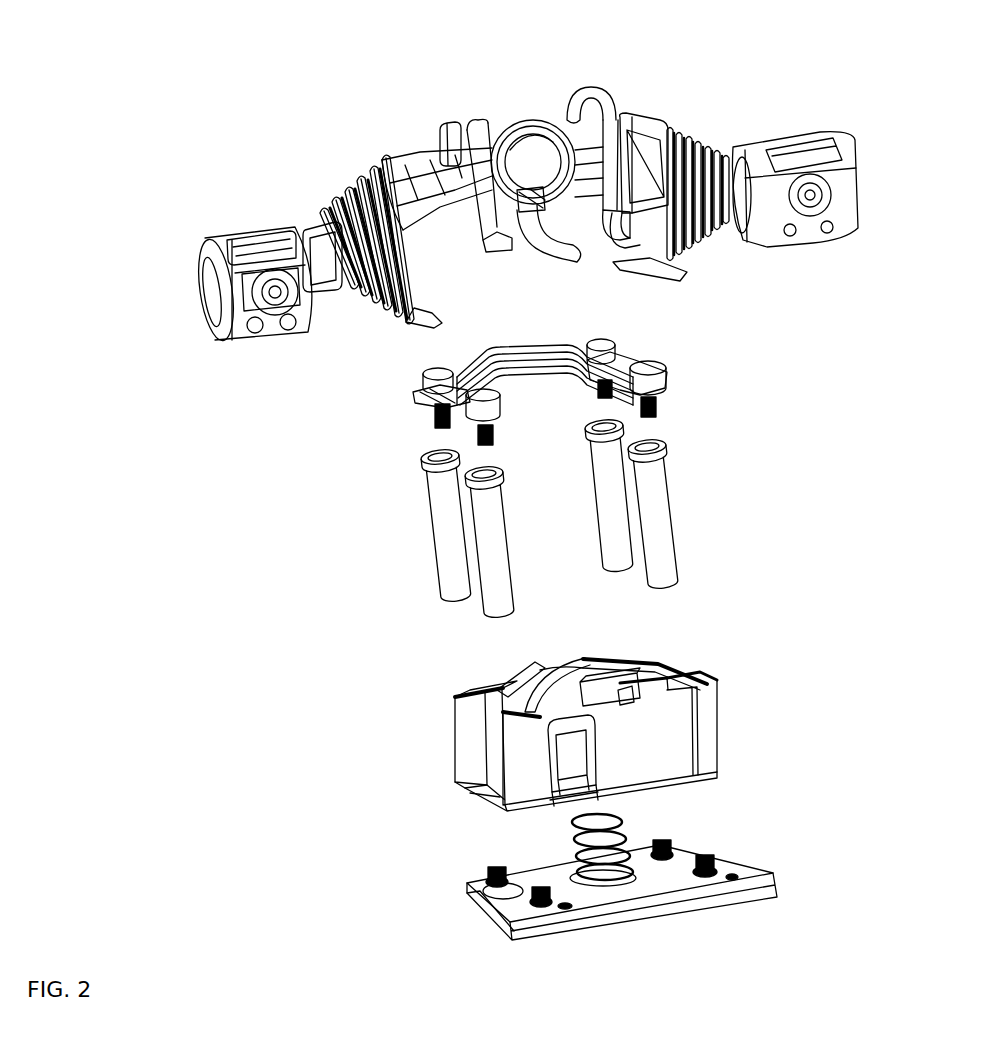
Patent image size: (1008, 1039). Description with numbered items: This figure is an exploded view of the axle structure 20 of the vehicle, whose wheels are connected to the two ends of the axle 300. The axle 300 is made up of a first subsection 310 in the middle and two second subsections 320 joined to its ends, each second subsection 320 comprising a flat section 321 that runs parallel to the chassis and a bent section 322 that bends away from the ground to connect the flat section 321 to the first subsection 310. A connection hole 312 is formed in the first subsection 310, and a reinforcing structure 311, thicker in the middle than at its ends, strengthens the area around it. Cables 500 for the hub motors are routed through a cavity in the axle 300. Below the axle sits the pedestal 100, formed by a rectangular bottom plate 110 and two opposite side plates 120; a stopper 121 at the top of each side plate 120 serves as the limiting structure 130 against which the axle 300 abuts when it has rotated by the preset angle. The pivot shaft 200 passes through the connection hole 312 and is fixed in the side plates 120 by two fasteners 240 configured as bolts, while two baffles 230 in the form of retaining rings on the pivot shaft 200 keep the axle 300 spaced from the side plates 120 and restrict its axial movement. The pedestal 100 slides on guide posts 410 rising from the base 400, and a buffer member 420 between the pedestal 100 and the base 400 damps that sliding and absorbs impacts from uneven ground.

The axle structure 20 is at (238, 508).
The axle 300 is at (100, 40).
The first subsection 310 is at (365, 163).
The reinforcing structure 311 is at (498, 118).
The connection hole 312 is at (544, 138).
The second subsection 320 is at (165, 78).
The flat section 321 is at (262, 235).
The bent section 322 is at (433, 148).
The cables 500 is at (437, 147).
The stopper 121 is at (600, 352).
The limiting structure 130 is at (540, 392).
The guide posts 410 is at (655, 515).
The pedestal 100 is at (297, 765).
The side plates 120 is at (472, 722).
The bottom plate 110 is at (473, 793).
The pivot shaft 200 is at (530, 675).
The baffles 230 is at (563, 673).
The fasteners 240 is at (620, 700).
The buffer member 420 is at (627, 822).
The base 400 is at (757, 890).